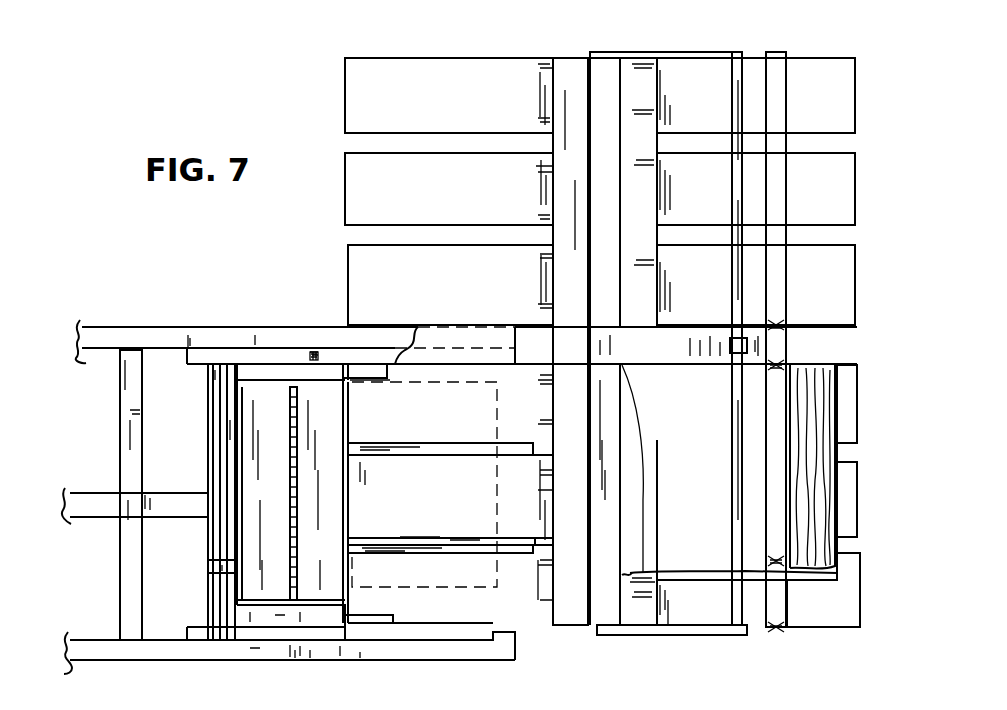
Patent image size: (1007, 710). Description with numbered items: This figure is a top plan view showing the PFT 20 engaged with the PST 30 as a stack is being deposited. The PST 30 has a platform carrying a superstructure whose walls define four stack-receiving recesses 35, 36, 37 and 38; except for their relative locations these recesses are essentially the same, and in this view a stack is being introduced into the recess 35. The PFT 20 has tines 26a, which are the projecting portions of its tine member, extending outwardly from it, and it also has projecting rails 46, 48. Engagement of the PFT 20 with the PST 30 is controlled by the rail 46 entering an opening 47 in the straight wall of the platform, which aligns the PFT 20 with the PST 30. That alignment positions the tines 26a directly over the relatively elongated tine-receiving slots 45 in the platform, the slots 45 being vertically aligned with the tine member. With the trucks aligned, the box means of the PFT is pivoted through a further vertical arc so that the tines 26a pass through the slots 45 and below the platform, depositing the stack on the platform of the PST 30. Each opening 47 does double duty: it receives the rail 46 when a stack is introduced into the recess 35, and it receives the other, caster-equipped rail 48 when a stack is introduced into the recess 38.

The PFT 20 is at (177, 325).
The tines 26a is at (453, 458).
The PST 30 is at (817, 631).
The stack-receiving recess 35 is at (433, 602).
The stack-receiving recess 36 is at (842, 495).
The stack-receiving recess 37 is at (801, 192).
The stack-receiving recess 38 is at (480, 177).
The slots 45 is at (543, 455).
The rail 46 is at (372, 341).
The opening 47 is at (329, 325).
The caster-equipped rail 48 is at (356, 648).